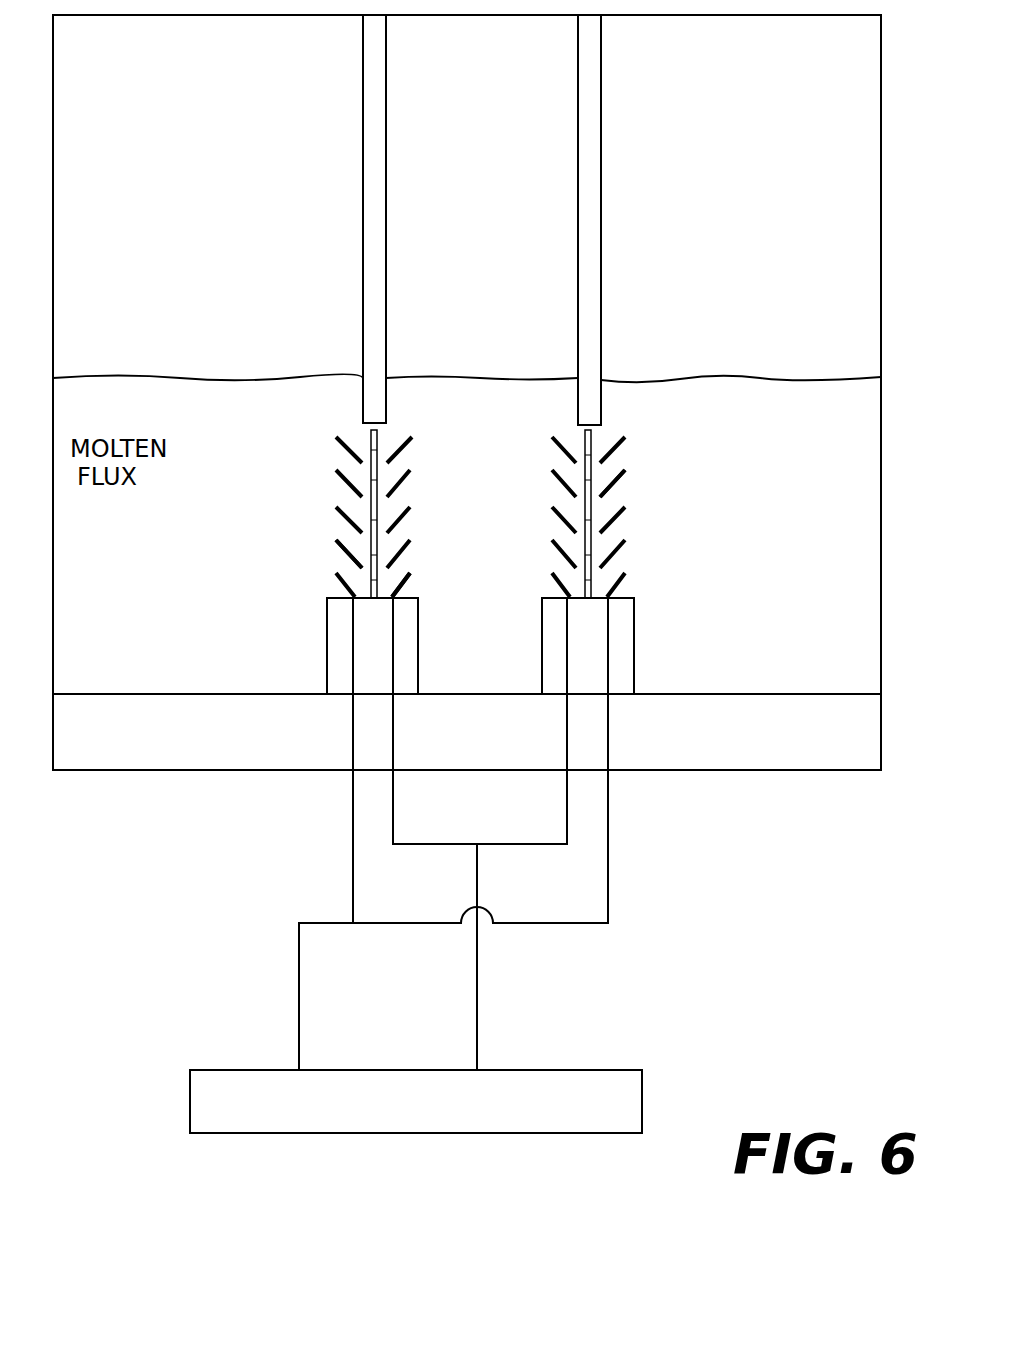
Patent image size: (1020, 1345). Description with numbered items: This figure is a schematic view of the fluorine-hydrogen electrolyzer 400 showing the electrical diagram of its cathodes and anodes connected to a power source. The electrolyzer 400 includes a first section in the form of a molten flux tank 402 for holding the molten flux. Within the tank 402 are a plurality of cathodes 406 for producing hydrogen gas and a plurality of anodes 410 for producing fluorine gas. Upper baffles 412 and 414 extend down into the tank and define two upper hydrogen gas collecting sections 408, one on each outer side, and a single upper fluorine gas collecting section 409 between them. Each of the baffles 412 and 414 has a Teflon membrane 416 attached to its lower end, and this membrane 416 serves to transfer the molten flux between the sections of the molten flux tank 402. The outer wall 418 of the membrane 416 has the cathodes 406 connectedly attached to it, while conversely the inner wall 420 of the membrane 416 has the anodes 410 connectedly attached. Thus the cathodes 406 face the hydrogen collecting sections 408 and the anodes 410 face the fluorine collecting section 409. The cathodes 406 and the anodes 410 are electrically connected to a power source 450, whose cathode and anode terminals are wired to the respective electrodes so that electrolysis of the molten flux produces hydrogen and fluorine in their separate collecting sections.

The fluorine-hydrogen electrolyzer 400 is at (740, 781).
The molten flux tank 402 is at (285, 655).
The cathodes 406 is at (343, 520).
The upper hydrogen gas collecting sections 408 is at (212, 136).
The upper fluorine gas collecting section 409 is at (422, 96).
The anodes 410 is at (402, 487).
The upper baffle 412 is at (363, 145).
The upper baffle 414 is at (578, 146).
The Teflon membrane 416 is at (382, 440).
The outer wall of membrane 418 is at (368, 555).
The inner wall of membrane 420 is at (378, 583).
The power source 450 is at (458, 1137).